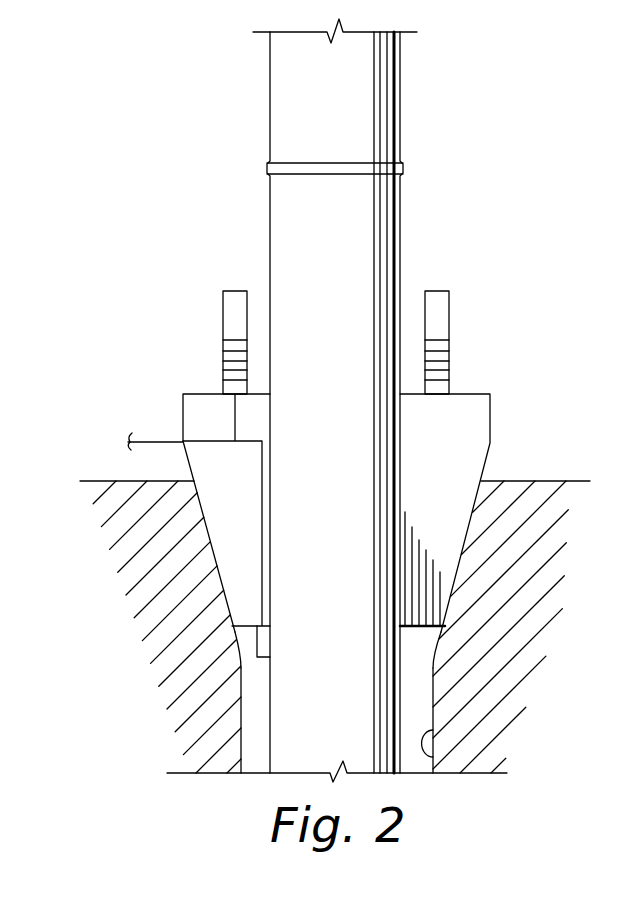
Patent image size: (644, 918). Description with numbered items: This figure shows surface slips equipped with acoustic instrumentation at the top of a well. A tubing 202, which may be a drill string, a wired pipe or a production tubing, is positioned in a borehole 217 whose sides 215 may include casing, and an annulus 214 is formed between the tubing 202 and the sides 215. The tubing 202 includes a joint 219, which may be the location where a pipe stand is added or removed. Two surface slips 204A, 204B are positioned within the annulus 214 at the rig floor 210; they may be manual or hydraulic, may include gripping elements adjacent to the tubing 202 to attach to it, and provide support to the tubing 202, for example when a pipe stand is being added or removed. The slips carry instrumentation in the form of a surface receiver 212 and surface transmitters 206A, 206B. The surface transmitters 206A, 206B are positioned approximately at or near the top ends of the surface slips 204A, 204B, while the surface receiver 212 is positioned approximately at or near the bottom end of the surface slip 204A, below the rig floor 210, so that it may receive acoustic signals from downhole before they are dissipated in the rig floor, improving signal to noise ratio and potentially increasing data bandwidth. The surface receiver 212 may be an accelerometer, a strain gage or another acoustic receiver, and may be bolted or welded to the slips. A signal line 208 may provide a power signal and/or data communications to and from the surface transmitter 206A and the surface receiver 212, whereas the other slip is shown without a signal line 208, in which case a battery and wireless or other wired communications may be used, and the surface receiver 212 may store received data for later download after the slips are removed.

The tubing 202 is at (270, 73).
The joint 219 is at (270, 164).
The surface transmitter 206A is at (223, 306).
The surface transmitter 206B is at (452, 307).
The surface slip 204A is at (205, 393).
The surface slip 204B is at (475, 393).
The signal line 208 is at (150, 442).
The rig floor 210 is at (550, 481).
The surface receiver 212 is at (265, 641).
The annulus 214 is at (257, 692).
The sides 215 is at (242, 738).
The borehole 217 is at (430, 748).